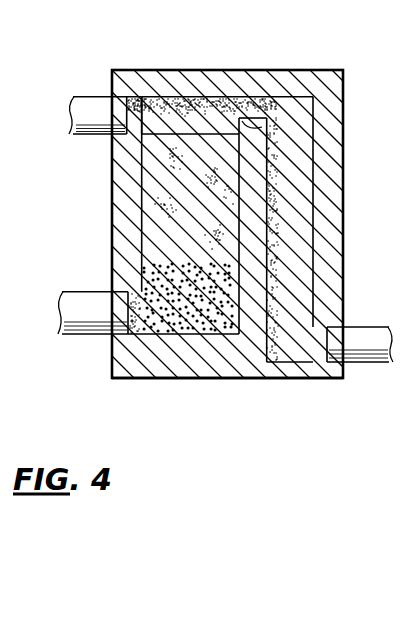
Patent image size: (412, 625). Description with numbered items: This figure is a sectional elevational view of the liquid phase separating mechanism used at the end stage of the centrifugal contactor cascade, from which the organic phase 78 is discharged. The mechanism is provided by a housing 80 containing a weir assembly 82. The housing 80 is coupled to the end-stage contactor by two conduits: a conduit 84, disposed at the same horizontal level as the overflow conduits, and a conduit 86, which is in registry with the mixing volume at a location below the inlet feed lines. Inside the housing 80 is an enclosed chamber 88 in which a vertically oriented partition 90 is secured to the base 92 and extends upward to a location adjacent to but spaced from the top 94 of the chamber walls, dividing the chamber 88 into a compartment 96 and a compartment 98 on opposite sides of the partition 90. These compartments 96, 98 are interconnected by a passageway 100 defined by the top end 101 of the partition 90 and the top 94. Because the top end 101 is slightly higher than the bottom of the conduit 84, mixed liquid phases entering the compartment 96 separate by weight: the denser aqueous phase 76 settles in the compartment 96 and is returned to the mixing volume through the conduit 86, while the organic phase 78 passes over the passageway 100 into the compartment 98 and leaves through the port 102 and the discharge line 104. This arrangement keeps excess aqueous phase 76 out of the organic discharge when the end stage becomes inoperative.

The aqueous phase 76 is at (167, 288).
The organic phase 78 is at (194, 198).
The housing 80 is at (344, 196).
The weir assembly 82 is at (270, 186).
The conduit 84 is at (103, 103).
The conduit 86 is at (85, 312).
The chamber 88 is at (179, 173).
The partition 90 is at (257, 285).
The base 92 is at (193, 336).
The top 94 is at (200, 110).
The compartment 96 is at (188, 248).
The compartment 98 is at (303, 243).
The passageway 100 is at (257, 105).
The top end of the partition 101 is at (273, 137).
The port 102 is at (320, 350).
The discharge line 104 is at (370, 335).